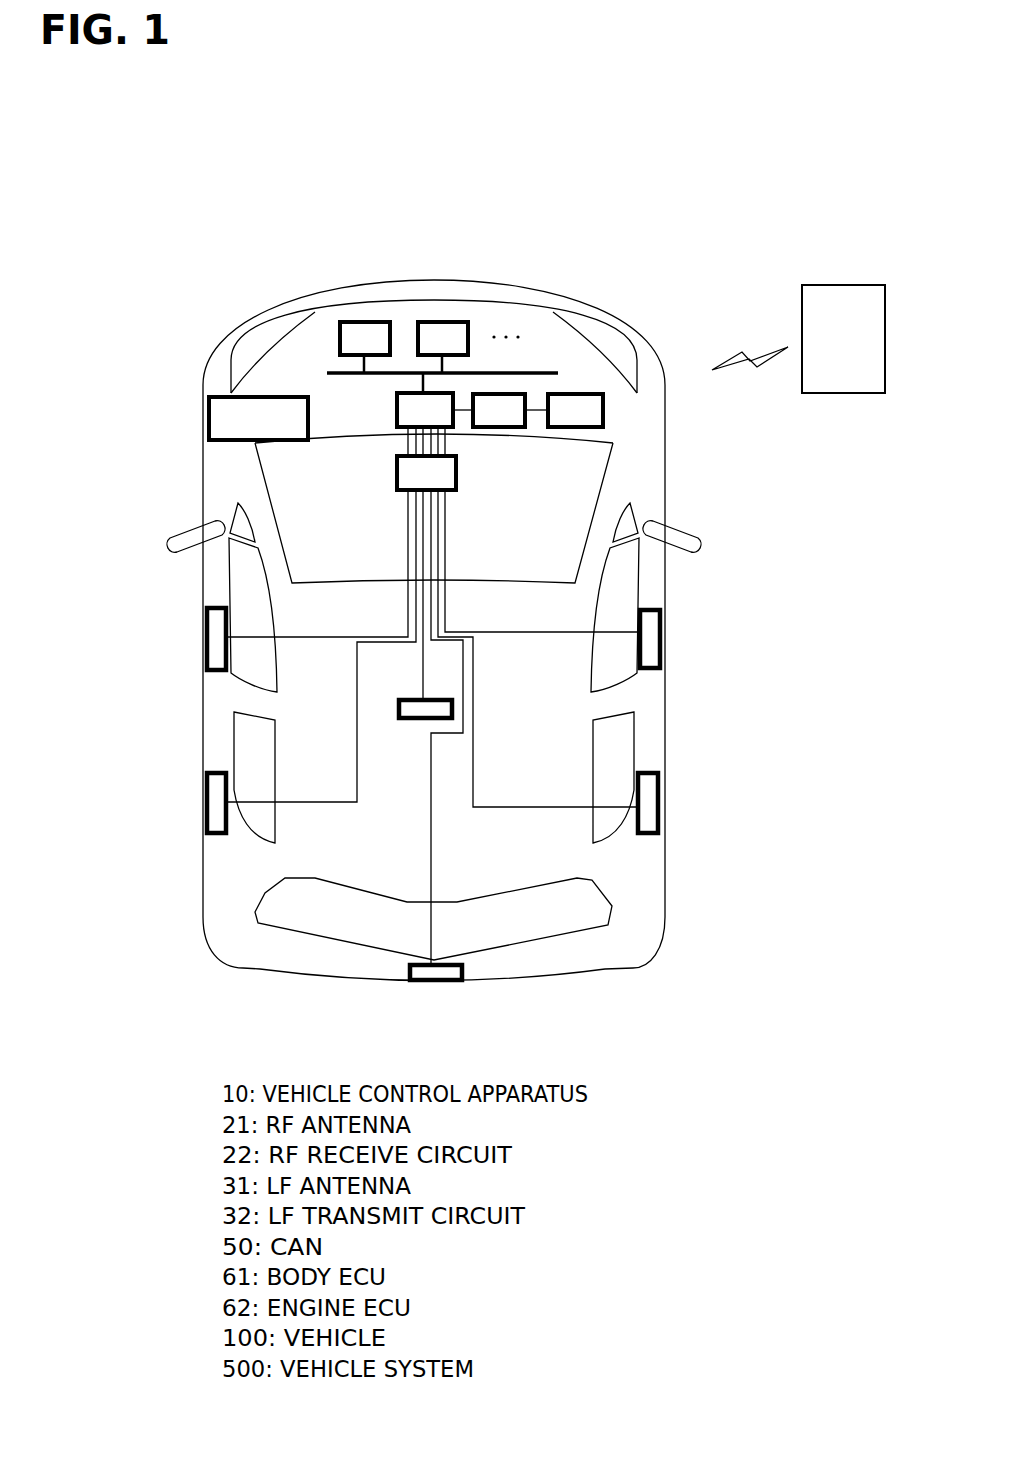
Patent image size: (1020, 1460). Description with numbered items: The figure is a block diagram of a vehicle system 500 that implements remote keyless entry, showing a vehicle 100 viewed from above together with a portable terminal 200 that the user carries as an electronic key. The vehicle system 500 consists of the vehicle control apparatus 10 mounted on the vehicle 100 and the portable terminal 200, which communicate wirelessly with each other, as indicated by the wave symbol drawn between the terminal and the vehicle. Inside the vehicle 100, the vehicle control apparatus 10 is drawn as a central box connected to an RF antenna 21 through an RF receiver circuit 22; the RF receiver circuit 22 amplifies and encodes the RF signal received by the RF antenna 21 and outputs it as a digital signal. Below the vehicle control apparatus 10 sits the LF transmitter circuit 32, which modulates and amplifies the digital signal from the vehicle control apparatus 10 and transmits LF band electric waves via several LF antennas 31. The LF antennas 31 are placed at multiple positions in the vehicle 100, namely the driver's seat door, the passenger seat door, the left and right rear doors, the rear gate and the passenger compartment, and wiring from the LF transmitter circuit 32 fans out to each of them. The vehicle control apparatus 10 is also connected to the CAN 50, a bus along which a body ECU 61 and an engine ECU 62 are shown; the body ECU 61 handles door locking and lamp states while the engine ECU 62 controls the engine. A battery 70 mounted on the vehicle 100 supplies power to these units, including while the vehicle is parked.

The vehicle control apparatus 10 is at (397, 410).
The RF antenna 21 is at (603, 412).
The RF receiver circuit 22 is at (500, 428).
The LF antennas 31 is at (207, 636).
The LF transmitter circuit 32 is at (397, 472).
The CAN 50 is at (333, 368).
The body ECU 61 is at (363, 322).
The engine ECU 62 is at (441, 322).
The battery 70 is at (209, 418).
The vehicle 100 is at (667, 462).
The portable terminal 200 is at (805, 285).
The vehicle system 500 is at (692, 237).